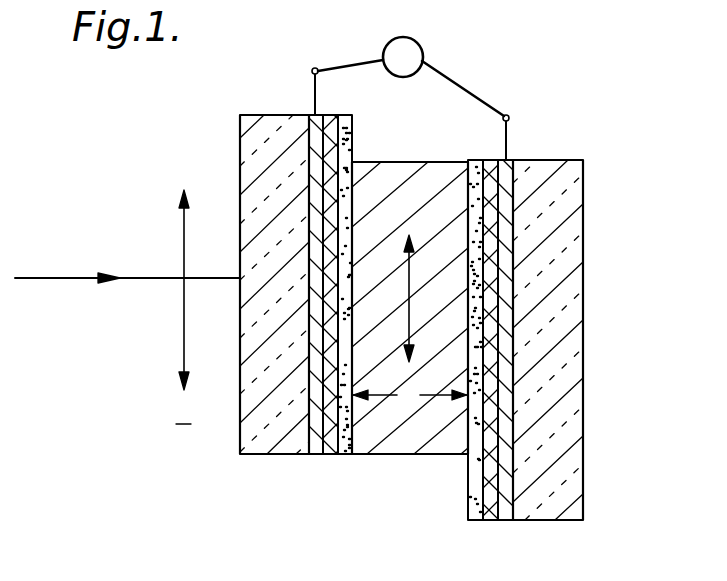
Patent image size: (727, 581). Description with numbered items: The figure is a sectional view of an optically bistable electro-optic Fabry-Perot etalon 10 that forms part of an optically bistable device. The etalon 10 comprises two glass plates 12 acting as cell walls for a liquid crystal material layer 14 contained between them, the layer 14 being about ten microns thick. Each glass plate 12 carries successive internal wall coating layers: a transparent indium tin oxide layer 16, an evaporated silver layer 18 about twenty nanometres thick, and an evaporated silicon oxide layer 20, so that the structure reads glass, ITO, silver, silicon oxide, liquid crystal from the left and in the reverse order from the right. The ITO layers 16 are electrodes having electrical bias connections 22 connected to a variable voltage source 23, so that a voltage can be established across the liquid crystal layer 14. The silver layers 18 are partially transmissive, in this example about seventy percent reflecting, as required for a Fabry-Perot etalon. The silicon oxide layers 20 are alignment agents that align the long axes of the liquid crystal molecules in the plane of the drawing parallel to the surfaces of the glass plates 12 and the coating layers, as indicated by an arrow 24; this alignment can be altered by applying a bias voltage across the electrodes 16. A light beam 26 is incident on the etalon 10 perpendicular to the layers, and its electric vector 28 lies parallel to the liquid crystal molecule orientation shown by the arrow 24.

The electro-optic Fabry-Perot etalon 10 is at (521, 139).
The glass plate 12 is at (243, 458).
The liquid crystal material layer 14 is at (406, 457).
The indium tin oxide layer 16 is at (316, 457).
The evaporated silver layer 18 is at (329, 457).
The evaporated silicon oxide layer 20 is at (345, 457).
The electrical bias connection 22 is at (313, 68).
The variable voltage source 23 is at (401, 37).
The arrow 24 is at (413, 240).
The light beam 26 is at (72, 277).
The electric vector 28 is at (182, 370).